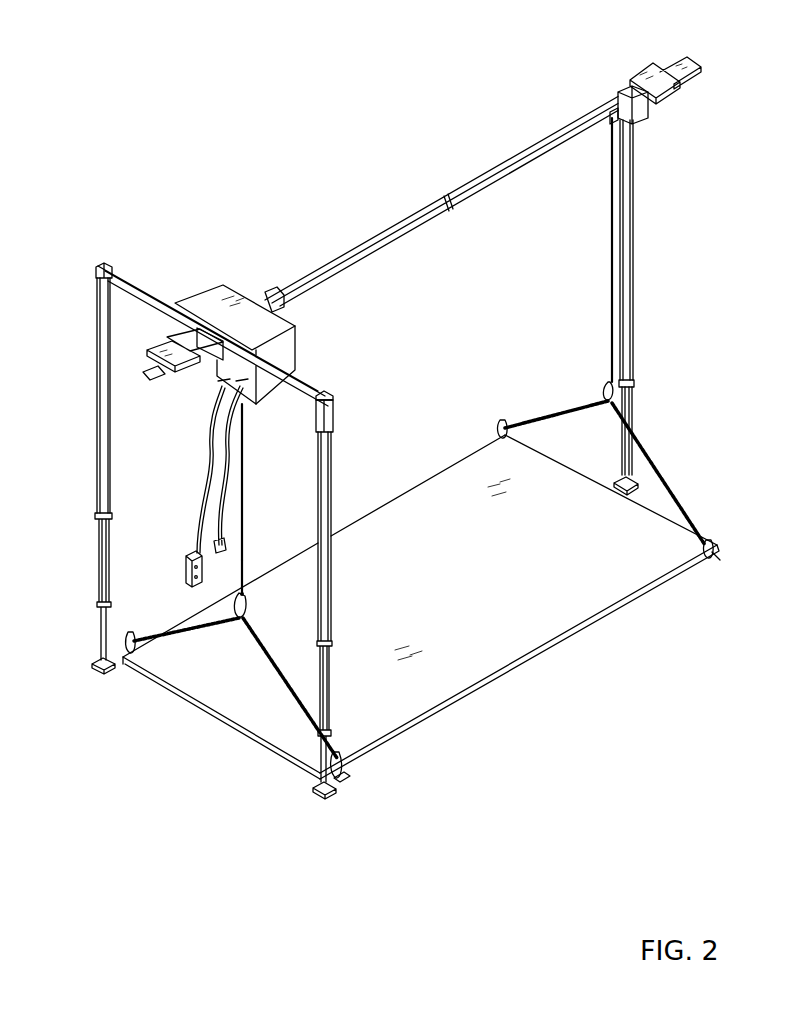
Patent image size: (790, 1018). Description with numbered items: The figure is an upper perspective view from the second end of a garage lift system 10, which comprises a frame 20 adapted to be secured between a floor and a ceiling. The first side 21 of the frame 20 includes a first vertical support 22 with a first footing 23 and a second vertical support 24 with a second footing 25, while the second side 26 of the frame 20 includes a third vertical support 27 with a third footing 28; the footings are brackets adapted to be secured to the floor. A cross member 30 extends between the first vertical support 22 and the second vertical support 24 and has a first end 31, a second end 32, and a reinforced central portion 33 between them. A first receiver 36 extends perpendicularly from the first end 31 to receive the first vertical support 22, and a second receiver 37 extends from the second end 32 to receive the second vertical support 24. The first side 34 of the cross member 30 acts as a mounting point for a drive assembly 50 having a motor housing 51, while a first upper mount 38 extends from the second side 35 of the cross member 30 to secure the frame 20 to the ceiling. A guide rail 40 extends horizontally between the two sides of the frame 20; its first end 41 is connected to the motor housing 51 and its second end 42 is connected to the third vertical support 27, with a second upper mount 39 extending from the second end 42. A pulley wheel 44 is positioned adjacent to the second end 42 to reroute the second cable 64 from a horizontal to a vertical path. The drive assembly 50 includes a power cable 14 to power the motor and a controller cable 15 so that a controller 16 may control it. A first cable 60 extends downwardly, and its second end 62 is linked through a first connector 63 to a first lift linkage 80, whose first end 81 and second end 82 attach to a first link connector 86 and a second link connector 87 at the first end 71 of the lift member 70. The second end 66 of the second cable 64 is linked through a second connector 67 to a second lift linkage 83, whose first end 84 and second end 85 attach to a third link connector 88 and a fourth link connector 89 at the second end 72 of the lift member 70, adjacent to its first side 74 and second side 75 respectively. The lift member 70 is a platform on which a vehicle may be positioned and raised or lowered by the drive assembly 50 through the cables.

The garage lift system 10 is at (238, 125).
The power cable 14 is at (218, 488).
The controller cable 15 is at (198, 526).
The controller 16 is at (190, 572).
The frame 20 is at (322, 372).
The first side of the frame 21 is at (112, 310).
The first vertical support 22 is at (98, 490).
The first footing 23 is at (100, 667).
The second vertical support 24 is at (331, 507).
The second footing 25 is at (325, 797).
The second side of the frame 26 is at (634, 195).
The third vertical support 27 is at (636, 245).
The third footing 28 is at (625, 487).
The cross member 30 is at (200, 318).
The first end of the cross member 31 is at (135, 298).
The second end of the cross member 32 is at (332, 393).
The central portion of the cross member 33 is at (208, 360).
The first side of the cross member 34 is at (312, 400).
The second side of the cross member 35 is at (312, 380).
The first receiver 36 is at (95, 278).
The second receiver 37 is at (334, 430).
The first upper mount 38 is at (158, 347).
The second upper mount 39 is at (632, 66).
The guide rail 40 is at (418, 210).
The first end of the guide rail 41 is at (266, 293).
The second end of the guide rail 42 is at (617, 94).
The pulley wheel 44 is at (612, 120).
The drive assembly 50 is at (206, 282).
The motor housing 51 is at (280, 325).
The first cable 60 is at (243, 510).
The second end of the first cable 62 is at (243, 580).
The first connector 63 is at (245, 606).
The second cable 64 is at (612, 300).
The second end of the second cable 66 is at (633, 380).
The second connector 67 is at (605, 392).
The lift member 70 is at (572, 648).
The first end of the lift member 71 is at (192, 700).
The second end of the lift member 72 is at (540, 448).
The first side of the lift member 74 is at (425, 480).
The second side of the lift member 75 is at (497, 683).
The first lift linkage 80 is at (267, 665).
The first end of the first lift linkage 81 is at (140, 628).
The second end of the first lift linkage 82 is at (340, 745).
The second lift linkage 83 is at (660, 460).
The first end of the second lift linkage 84 is at (505, 422).
The second end of the second lift linkage 85 is at (708, 545).
The first link connector 86 is at (128, 642).
The second link connector 87 is at (345, 778).
The third link connector 88 is at (500, 430).
The fourth link connector 89 is at (720, 562).